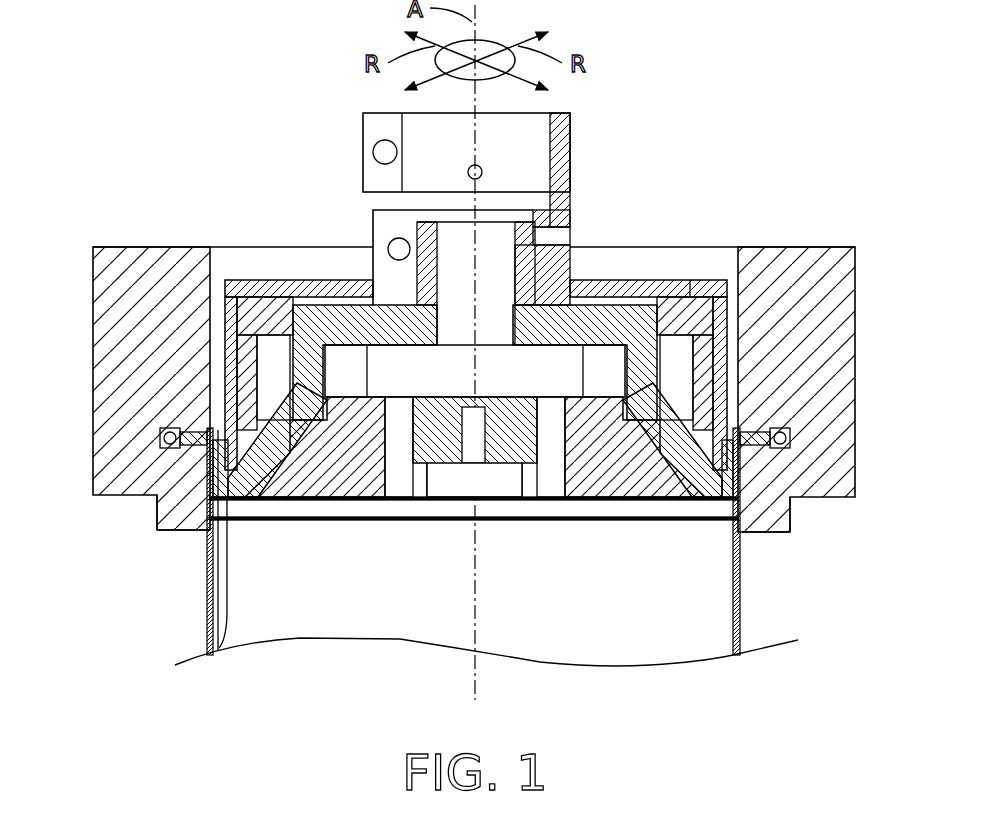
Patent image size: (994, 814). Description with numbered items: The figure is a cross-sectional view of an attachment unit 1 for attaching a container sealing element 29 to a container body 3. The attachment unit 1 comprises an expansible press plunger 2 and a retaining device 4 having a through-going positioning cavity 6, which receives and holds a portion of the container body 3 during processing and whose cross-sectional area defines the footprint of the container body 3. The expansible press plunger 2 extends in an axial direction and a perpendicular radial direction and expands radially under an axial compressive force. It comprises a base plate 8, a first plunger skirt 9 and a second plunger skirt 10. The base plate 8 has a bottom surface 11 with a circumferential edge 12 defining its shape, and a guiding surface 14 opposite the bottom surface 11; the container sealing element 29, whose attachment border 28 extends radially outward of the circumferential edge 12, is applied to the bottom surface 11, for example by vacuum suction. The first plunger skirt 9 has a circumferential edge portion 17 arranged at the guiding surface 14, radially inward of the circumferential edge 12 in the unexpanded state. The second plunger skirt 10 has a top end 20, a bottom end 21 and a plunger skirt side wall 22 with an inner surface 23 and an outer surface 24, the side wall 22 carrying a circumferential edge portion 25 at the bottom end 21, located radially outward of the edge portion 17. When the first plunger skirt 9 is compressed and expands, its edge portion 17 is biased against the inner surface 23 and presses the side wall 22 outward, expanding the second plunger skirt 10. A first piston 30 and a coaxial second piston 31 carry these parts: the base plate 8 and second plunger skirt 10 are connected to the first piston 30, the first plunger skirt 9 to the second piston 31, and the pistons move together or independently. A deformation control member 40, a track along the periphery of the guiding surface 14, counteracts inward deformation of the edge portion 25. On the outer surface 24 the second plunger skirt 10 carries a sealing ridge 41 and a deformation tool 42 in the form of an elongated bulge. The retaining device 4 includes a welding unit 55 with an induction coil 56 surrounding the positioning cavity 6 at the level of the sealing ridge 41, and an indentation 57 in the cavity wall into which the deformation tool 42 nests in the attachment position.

The attachment unit 1 is at (745, 88).
The expansible press plunger 2 is at (287, 225).
The container body 3 is at (740, 612).
The retaining device 4 is at (785, 300).
The positioning cavity 6 is at (703, 268).
The base plate 8 is at (653, 500).
The first plunger skirt 9 is at (298, 500).
The second plunger skirt 10 is at (235, 362).
The bottom surface 11 is at (609, 500).
The circumferential edge 12 is at (787, 507).
The guiding surface 14 is at (267, 500).
The circumferential edge portion 17 is at (207, 603).
The top end 20 is at (636, 280).
The bottom end 21 is at (207, 638).
The plunger skirt side wall 22 is at (735, 296).
The inner surface 23 is at (740, 393).
The outer surface 24 is at (735, 360).
The circumferential edge portion 25 is at (177, 530).
The attachment border 28 is at (198, 515).
The container sealing element 29 is at (367, 500).
The first piston 30 is at (513, 500).
The second piston 31 is at (475, 276).
The deformation control member 40 is at (710, 500).
The sealing ridge 41 is at (207, 460).
The deformation tool 42 is at (805, 498).
The welding unit 55 is at (810, 455).
The induction coil 56 is at (790, 433).
The indentation 57 is at (155, 512).